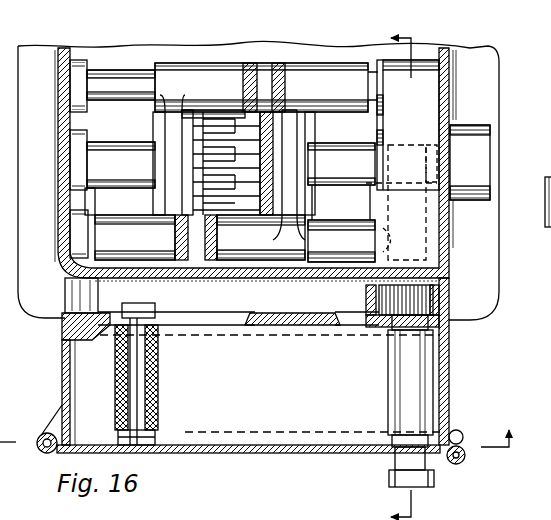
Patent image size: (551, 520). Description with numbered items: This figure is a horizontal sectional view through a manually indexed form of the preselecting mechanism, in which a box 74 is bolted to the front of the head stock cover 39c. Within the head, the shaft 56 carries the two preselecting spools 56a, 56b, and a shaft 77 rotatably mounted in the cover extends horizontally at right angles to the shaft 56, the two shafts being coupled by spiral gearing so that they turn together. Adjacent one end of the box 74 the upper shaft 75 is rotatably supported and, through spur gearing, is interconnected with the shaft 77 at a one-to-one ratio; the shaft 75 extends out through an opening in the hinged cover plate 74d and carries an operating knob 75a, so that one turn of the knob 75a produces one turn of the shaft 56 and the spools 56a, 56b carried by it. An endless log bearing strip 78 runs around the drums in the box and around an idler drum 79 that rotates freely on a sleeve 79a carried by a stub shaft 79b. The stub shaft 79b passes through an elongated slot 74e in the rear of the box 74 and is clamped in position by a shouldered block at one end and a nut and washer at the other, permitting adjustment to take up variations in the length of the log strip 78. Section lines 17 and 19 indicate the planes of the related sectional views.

The housing cover 39c is at (450, 108).
The shaft 56 is at (322, 152).
The preselecting spool 56a is at (156, 200).
The preselecting spool 56b is at (312, 198).
The shaft 77 is at (368, 238).
The box 74 is at (62, 367).
The hinged cover plate 74d is at (203, 454).
The elongated slot 74e is at (221, 318).
The upper shaft 75 is at (550, 172).
The operating knob 75a is at (391, 478).
The endless log bearing strip 78 is at (300, 430).
The idler drum 79 is at (157, 405).
The sleeve 79a is at (120, 372).
The stub shaft 79b is at (157, 380).
The section line 17- 17 is at (266, 430).
The section line 19- 19 is at (386, 276).